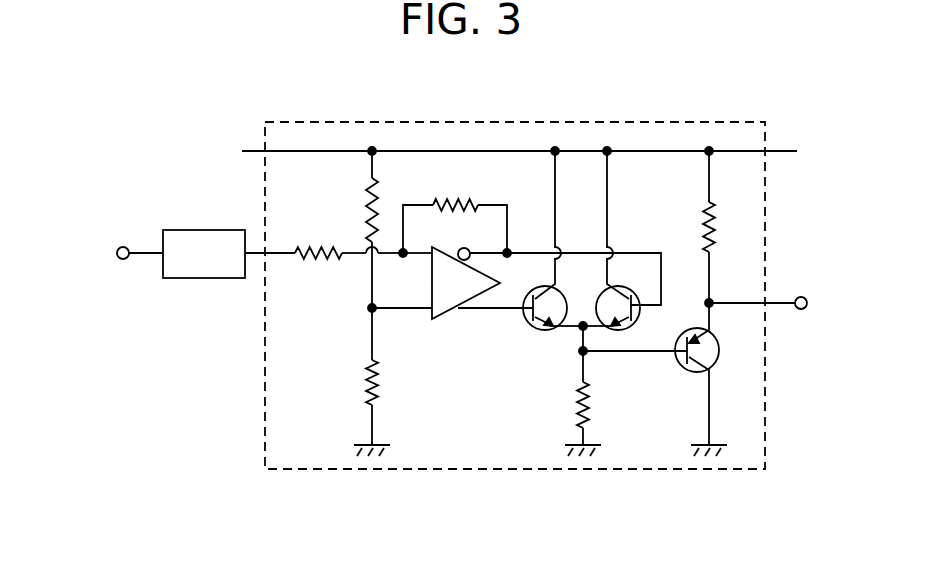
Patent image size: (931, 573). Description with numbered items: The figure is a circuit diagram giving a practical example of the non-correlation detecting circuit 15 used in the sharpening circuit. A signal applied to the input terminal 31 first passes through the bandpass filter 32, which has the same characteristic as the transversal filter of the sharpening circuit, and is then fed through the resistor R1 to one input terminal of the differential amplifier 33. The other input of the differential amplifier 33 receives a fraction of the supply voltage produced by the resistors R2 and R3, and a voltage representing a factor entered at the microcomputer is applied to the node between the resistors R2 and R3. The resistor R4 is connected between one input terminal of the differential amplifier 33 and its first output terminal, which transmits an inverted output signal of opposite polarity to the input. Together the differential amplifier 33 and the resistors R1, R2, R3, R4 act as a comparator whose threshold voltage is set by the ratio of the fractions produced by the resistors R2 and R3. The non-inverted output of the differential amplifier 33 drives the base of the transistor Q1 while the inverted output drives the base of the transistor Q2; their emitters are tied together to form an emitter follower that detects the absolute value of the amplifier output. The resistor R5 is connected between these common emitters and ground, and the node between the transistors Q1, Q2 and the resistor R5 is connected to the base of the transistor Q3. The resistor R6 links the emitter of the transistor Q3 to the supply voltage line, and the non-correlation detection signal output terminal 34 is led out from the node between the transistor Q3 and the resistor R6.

The non-correlation detecting circuit 15 is at (679, 122).
The input terminal 31 is at (124, 247).
The bandpass filter 32 is at (206, 230).
The differential amplifier 33 is at (452, 319).
The non-correlation detection signal output terminal 34 is at (801, 297).
The resistor R1 is at (326, 262).
The resistor R2 is at (370, 194).
The resistor R3 is at (370, 386).
The resistor R4 is at (452, 197).
The resistor R5 is at (580, 412).
The resistor R6 is at (706, 216).
The transistor Q1 is at (520, 240).
The transistor Q2 is at (584, 240).
The transistor Q3 is at (651, 374).